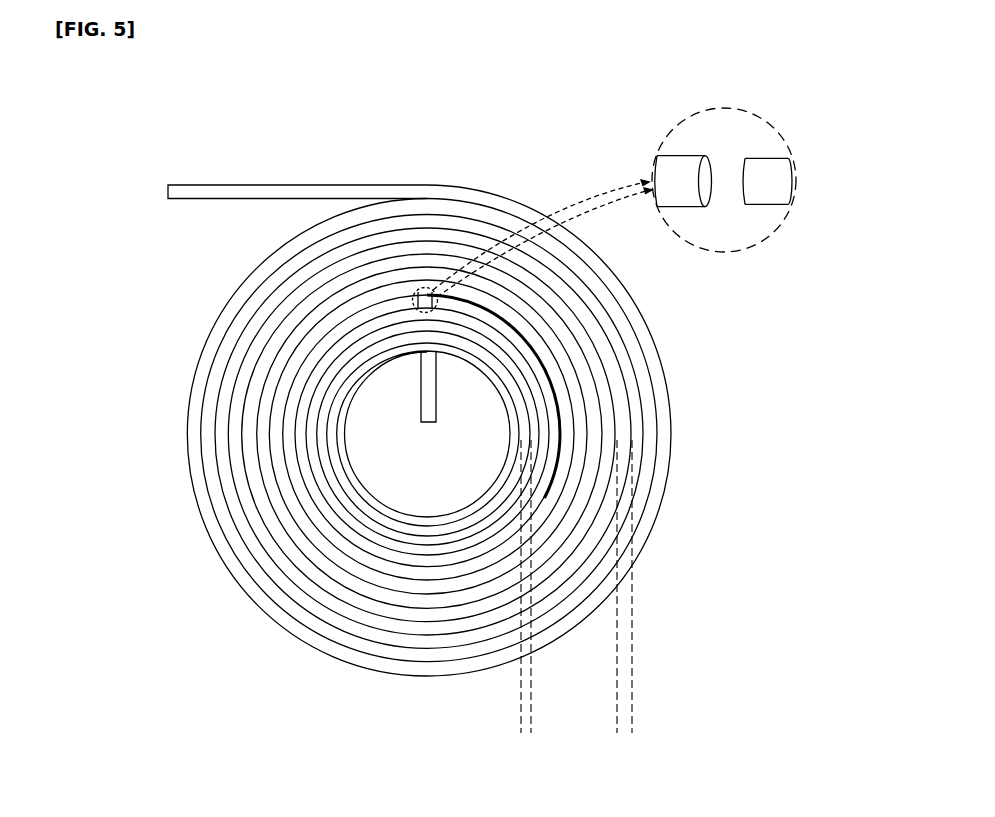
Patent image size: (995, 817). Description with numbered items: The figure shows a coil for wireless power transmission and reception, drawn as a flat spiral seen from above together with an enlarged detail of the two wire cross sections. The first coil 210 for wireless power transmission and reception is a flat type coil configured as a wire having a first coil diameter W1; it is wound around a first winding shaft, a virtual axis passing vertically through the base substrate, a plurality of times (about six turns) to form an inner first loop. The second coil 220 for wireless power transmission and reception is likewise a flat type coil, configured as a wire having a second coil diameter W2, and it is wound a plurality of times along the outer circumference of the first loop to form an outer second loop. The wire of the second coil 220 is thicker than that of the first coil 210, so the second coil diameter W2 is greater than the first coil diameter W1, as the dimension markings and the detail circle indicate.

The first coil for wireless power transmission and reception 210 is at (326, 436).
The second coil for wireless power transmission and reception 220 is at (672, 436).
The first coil diameter W1 is at (558, 726).
The second coil diameter W2 is at (660, 726).